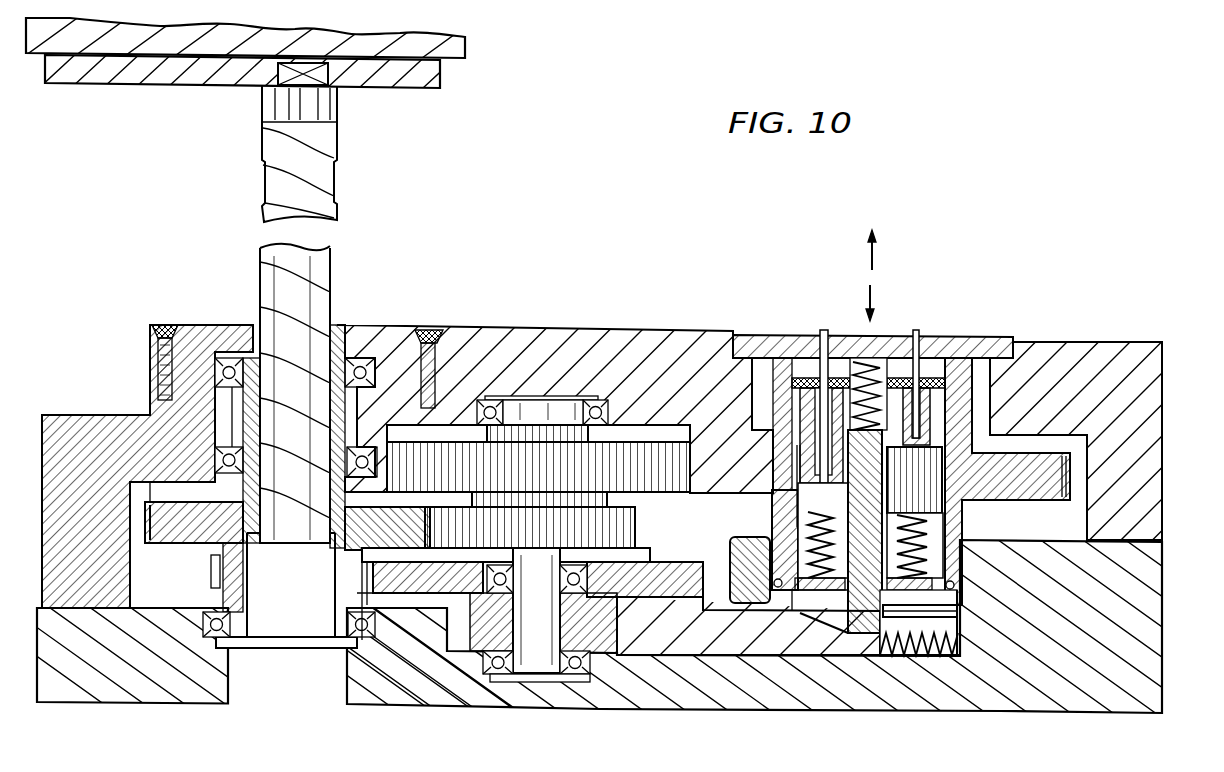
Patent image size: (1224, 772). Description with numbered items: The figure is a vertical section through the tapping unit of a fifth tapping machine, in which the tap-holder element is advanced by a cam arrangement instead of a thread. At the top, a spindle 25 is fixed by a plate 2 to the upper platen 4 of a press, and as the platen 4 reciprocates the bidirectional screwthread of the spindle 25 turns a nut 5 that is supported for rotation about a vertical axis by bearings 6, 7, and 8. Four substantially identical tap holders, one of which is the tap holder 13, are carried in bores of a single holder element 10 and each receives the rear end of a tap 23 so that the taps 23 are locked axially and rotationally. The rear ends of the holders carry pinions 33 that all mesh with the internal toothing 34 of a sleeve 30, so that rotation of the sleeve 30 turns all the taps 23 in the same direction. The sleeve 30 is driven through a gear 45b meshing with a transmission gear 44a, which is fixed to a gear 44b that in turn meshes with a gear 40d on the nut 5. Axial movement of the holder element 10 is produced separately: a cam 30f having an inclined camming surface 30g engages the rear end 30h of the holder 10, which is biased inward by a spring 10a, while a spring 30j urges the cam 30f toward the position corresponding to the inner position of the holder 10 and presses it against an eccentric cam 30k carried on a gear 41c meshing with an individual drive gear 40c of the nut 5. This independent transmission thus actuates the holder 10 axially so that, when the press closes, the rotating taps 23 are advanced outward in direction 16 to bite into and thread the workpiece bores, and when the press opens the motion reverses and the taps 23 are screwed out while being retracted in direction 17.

The plate 2 is at (430, 79).
The upper platen 4 is at (466, 48).
The nut 5 is at (338, 587).
The bearing 6 is at (223, 347).
The bearing 7 is at (212, 444).
The bearing 8 is at (213, 590).
The holder element 10 is at (943, 500).
The spring 10a is at (870, 370).
The tap holder 13 is at (920, 395).
The outward direction 16 is at (874, 253).
The retraction direction 17 is at (872, 303).
The tap 23 is at (821, 330).
The spindle 25 is at (320, 198).
The sleeve 30 is at (978, 398).
The cam 30f is at (710, 640).
The inclined camming surface 30g is at (822, 628).
The rear end of holder 30h is at (862, 622).
The spring 30j is at (920, 650).
The eccentric cam 30k is at (592, 655).
The pinion 33 is at (1112, 340).
The internal toothing 34 is at (775, 520).
The individual drive gear 40c is at (212, 570).
The gear 40d is at (403, 530).
The gear 41c is at (703, 568).
The transmission gear 44a is at (643, 452).
The gear 44b is at (605, 532).
The stop pin 45b is at (1068, 476).